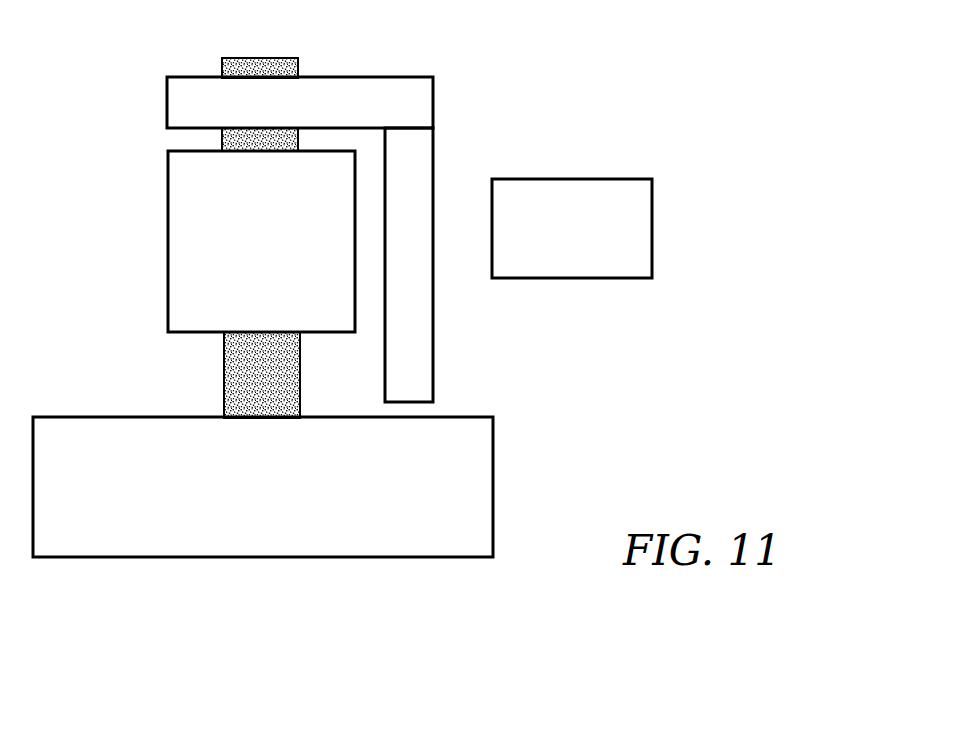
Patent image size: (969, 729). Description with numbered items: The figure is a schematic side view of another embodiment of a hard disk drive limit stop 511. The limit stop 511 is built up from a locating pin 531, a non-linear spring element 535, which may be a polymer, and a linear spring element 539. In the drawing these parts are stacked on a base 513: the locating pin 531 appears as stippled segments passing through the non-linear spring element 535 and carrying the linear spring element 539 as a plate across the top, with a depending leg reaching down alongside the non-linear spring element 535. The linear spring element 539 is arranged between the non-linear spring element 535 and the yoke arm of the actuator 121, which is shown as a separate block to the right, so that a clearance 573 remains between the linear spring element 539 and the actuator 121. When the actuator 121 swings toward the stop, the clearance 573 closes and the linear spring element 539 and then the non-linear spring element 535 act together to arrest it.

The limit stop 511 is at (616, 50).
The base 513 is at (220, 560).
The locating pin 531 is at (248, 57).
The non-linear spring element 535 is at (167, 183).
The linear spring element 539 is at (363, 76).
The clearance 573 is at (375, 302).
The actuator 121 is at (585, 178).